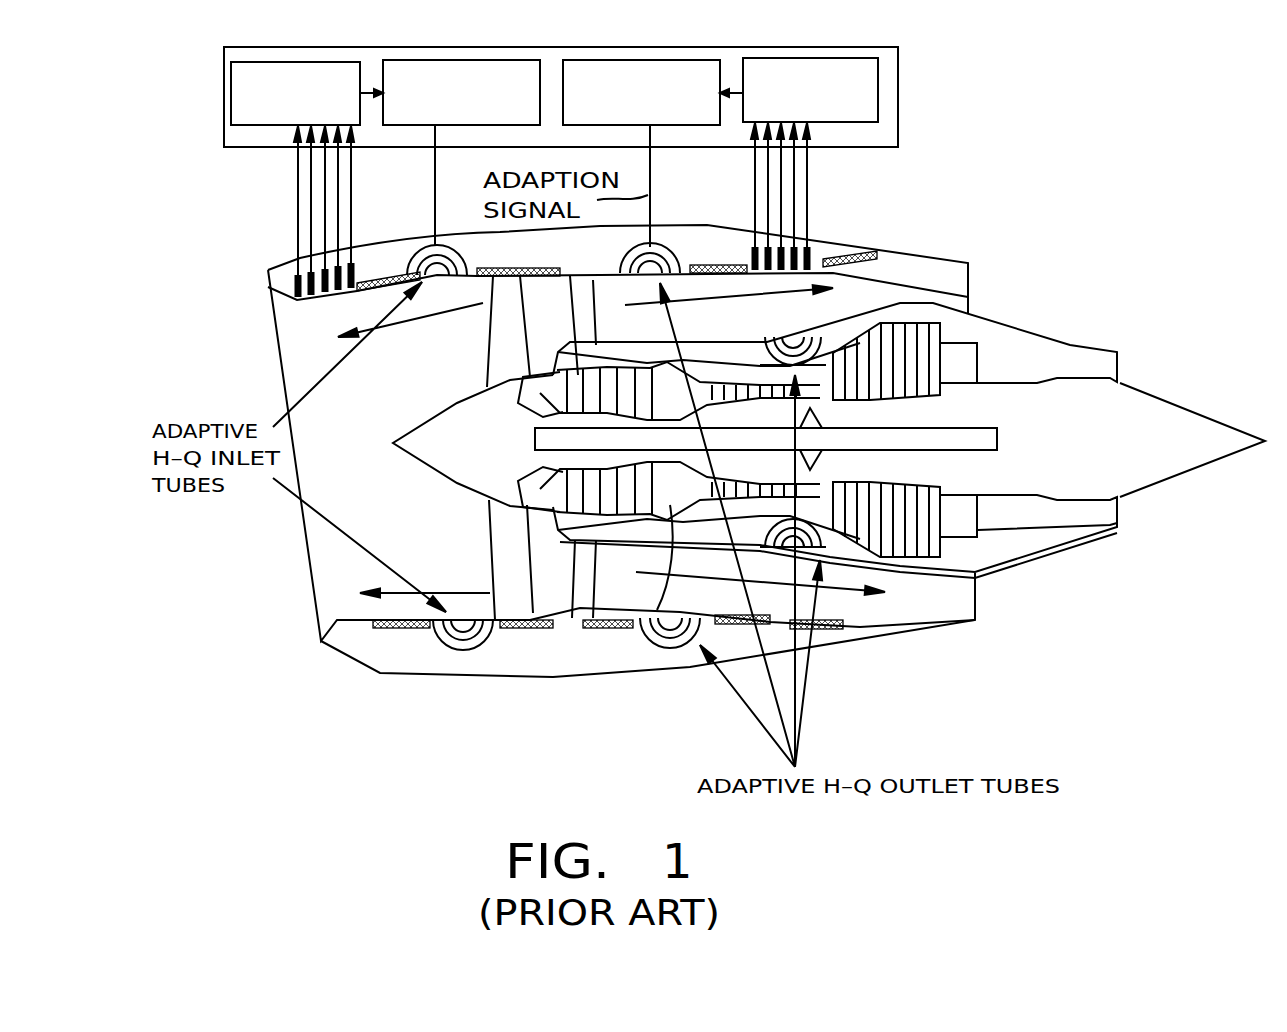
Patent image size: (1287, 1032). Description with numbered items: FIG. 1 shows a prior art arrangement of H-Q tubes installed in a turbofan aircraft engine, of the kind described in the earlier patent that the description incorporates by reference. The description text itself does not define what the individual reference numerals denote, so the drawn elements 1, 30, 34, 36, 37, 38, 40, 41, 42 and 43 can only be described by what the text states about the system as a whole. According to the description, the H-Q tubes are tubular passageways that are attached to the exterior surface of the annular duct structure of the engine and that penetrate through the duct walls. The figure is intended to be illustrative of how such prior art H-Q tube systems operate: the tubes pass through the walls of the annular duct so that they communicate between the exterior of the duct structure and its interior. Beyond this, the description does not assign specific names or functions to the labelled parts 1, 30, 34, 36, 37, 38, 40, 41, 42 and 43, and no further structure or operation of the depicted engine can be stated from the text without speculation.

The actuator/sensor 1 is at (437, 246).
The gas turbine engine nacelle 30 is at (833, 242).
The fan duct wall 34 is at (935, 283).
The fan 36 is at (503, 352).
The stator vanes 37 is at (583, 600).
The inlet 38 is at (305, 358).
The exhaust nozzle 40 is at (975, 598).
The feedback controller 41 is at (898, 100).
The acoustic liner 42 is at (385, 628).
The adaptive H-Q inlet tubes 43 is at (333, 293).